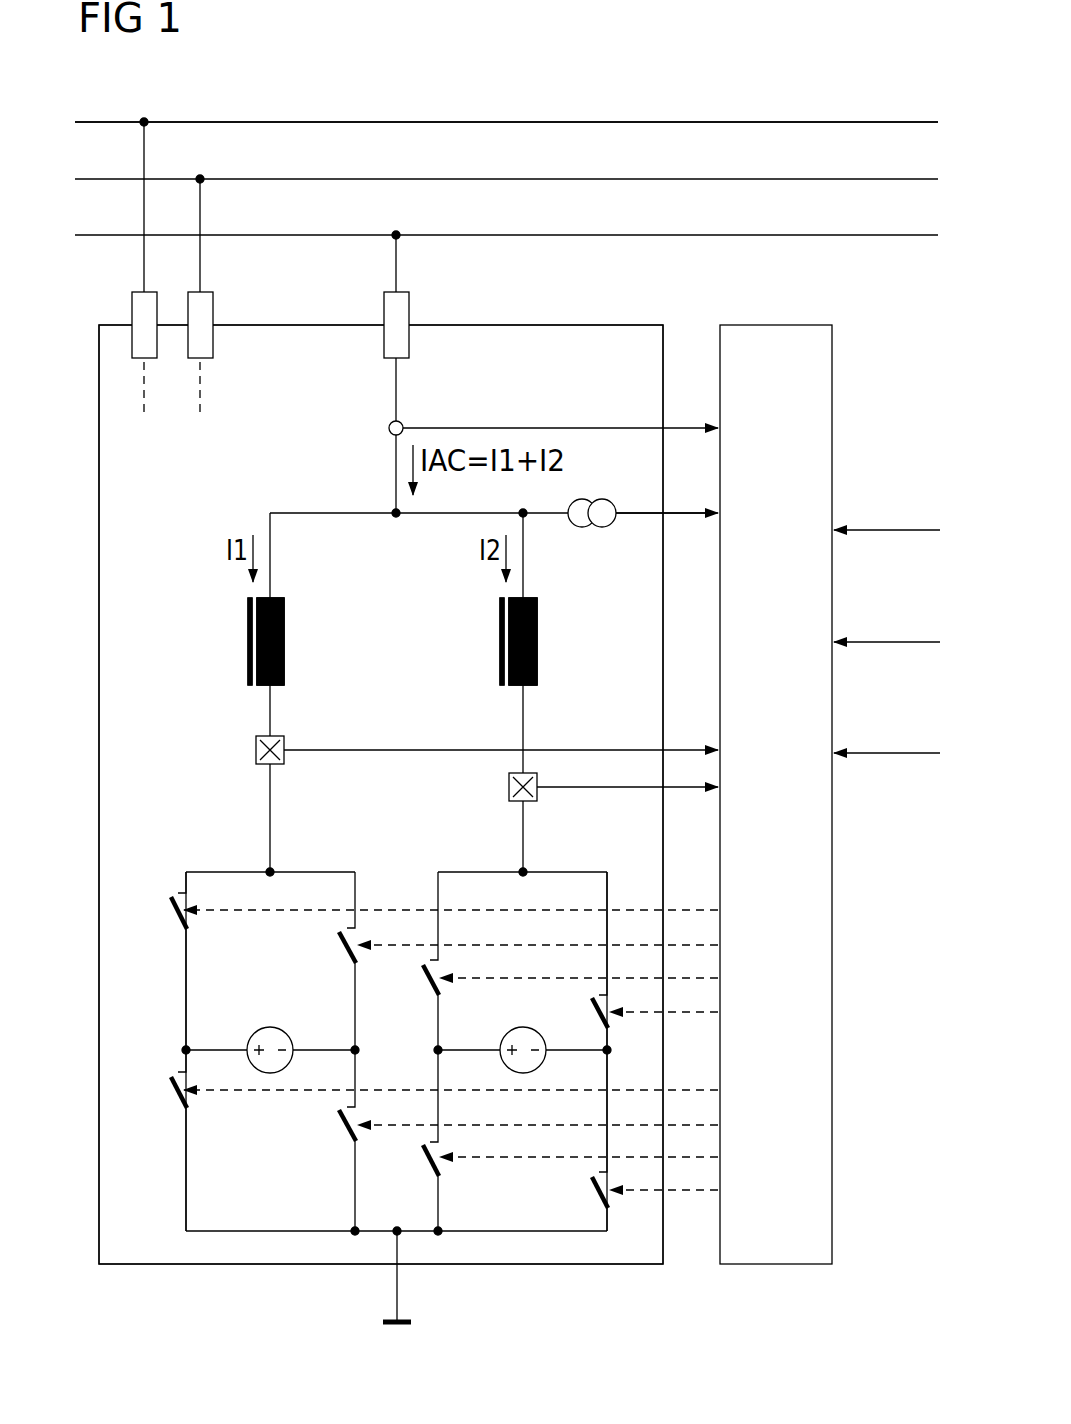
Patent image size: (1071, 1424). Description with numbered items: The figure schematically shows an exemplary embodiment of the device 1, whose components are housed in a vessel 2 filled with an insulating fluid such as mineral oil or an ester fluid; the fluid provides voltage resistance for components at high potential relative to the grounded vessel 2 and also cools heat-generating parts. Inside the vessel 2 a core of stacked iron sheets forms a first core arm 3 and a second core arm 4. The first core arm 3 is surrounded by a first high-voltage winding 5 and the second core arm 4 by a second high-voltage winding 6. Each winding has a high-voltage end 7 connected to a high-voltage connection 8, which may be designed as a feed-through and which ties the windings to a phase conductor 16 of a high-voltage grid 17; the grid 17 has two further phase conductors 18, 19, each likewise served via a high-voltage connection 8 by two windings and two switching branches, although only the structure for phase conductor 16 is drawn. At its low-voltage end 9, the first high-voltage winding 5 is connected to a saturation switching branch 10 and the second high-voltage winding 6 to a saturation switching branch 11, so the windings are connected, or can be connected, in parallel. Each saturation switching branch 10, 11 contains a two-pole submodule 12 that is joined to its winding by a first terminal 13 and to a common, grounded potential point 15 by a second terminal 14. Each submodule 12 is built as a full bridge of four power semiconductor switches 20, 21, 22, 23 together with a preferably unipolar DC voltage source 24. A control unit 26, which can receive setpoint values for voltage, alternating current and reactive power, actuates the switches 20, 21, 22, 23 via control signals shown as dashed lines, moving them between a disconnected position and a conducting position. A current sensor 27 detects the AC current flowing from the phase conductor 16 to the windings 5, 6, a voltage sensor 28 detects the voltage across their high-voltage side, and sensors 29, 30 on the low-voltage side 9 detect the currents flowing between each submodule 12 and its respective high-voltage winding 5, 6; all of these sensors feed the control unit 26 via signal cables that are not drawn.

The device 1 is at (77, 452).
The vessel 2 is at (262, 1265).
The first core arm 3 is at (248, 640).
The second core arm 4 is at (500, 640).
The first high-voltage winding 5 is at (286, 640).
The second high-voltage winding 6 is at (540, 640).
The high-voltage end 7 is at (284, 600).
The high-voltage connection 8 is at (130, 306).
The low-voltage end 9 is at (280, 686).
The saturation switching branch 10 is at (284, 858).
The saturation switching branch 11 is at (538, 858).
The two-pole submodule 12 is at (176, 1232).
The first terminal 13 is at (270, 851).
The second terminal 14 is at (372, 1233).
The potential point 15 is at (409, 1324).
The phase conductor 16 is at (862, 235).
The high-voltage grid 17 is at (357, 103).
The phase conductor 18 is at (862, 179).
The phase conductor 19 is at (862, 122).
The power semiconductor switch 20 is at (172, 904).
The power semiconductor switch 21 is at (172, 1084).
The power semiconductor switch 22 is at (340, 942).
The power semiconductor switch 23 is at (340, 1117).
The DC voltage source 24 is at (262, 1030).
The control unit 26 is at (775, 1265).
The current sensor 27 is at (389, 428).
The voltage sensor 28 is at (606, 498).
The sensor 29 is at (256, 750).
The sensor 30 is at (509, 787).